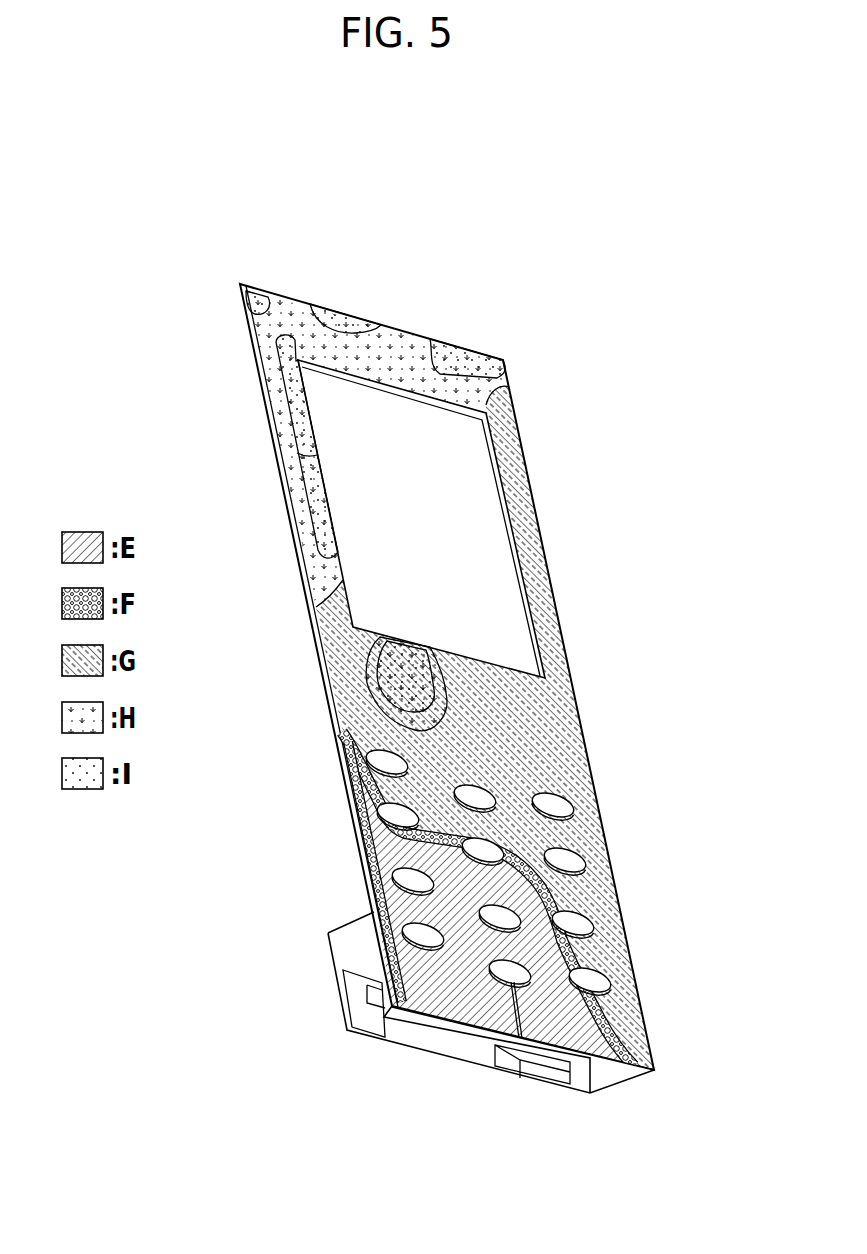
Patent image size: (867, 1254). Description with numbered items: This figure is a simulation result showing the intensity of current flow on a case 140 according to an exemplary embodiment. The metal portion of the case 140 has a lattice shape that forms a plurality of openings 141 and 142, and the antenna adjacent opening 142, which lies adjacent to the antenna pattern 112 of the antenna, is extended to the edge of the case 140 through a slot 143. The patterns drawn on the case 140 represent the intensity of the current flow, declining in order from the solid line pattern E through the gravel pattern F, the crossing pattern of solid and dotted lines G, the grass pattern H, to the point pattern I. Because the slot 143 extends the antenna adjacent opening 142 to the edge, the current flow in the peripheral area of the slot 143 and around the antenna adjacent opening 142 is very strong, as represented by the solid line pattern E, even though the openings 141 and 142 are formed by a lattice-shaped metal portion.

The case 140 is at (503, 359).
The openings 141 is at (398, 845).
The antenna adjacent opening 142 is at (575, 945).
The slot 143 is at (528, 1014).
The antenna pattern 112 is at (362, 999).